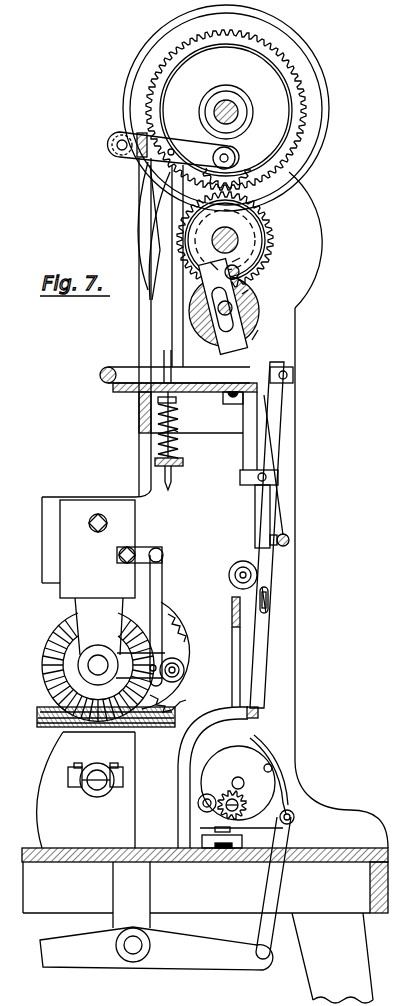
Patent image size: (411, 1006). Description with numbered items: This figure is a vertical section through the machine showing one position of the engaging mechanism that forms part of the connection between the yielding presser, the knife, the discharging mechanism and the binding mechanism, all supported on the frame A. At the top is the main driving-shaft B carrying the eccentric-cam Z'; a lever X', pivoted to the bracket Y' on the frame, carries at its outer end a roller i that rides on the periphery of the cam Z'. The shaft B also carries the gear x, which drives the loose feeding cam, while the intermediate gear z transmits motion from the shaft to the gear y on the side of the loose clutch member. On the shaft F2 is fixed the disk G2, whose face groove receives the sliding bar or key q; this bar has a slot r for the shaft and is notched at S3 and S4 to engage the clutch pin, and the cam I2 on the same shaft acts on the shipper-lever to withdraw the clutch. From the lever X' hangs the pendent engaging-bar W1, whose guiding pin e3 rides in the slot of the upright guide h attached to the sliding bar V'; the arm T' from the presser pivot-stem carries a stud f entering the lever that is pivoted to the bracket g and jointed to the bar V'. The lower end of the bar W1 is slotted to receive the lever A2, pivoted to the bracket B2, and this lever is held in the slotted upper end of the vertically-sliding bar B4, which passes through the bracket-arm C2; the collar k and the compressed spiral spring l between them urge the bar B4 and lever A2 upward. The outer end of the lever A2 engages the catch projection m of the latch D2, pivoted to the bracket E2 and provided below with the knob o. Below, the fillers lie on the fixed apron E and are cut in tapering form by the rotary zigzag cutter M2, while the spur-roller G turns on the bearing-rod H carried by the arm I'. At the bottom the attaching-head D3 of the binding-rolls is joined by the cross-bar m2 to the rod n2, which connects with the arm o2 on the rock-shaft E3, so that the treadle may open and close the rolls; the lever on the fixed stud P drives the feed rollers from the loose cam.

The eccentric-cam Z' is at (226, 108).
The main driving-shaft B is at (213, 112).
The intermediate gear z is at (242, 165).
The gear y is at (273, 241).
The lever X' is at (173, 150).
The bracket Y' is at (122, 159).
The roller i is at (220, 158).
The disk G2 is at (255, 300).
The sliding bar or key q is at (223, 307).
The slot r is at (222, 303).
The gear x is at (240, 265).
The notch S3 is at (209, 260).
The notch S4 is at (241, 252).
The shaft F2 is at (250, 291).
The fixed stud P is at (261, 333).
The pendent engaging-bar W1 is at (180, 286).
The bracket B2 is at (110, 383).
The lever A2 is at (134, 392).
The upright slotted guide h is at (176, 354).
The catch projection m is at (236, 387).
The vertically-sliding bar B4 is at (132, 366).
The collar k is at (177, 412).
The compressed spiral spring l is at (178, 430).
The bracket-arm C2 is at (181, 467).
The bracket E2 is at (252, 458).
The knob or handle o is at (290, 541).
The latch D2 is at (268, 370).
The guiding arm or pin e3 is at (273, 465).
The sliding bar V' is at (269, 470).
The downwardly-extending arm T' is at (285, 600).
The stud f is at (271, 607).
The arm I' is at (140, 617).
The rotary zigzag cutter M2 is at (60, 648).
The spur-roller G is at (166, 657).
The bearing-rod H is at (184, 671).
The fixed apron E is at (48, 727).
The bracket g is at (256, 718).
The cam I2 is at (260, 741).
The attaching-head D3 is at (273, 768).
The cross-bar m2 is at (296, 817).
The rod n2 is at (284, 893).
The frame A is at (354, 850).
The arm o2 is at (156, 948).
The rock-shaft E3 is at (134, 956).